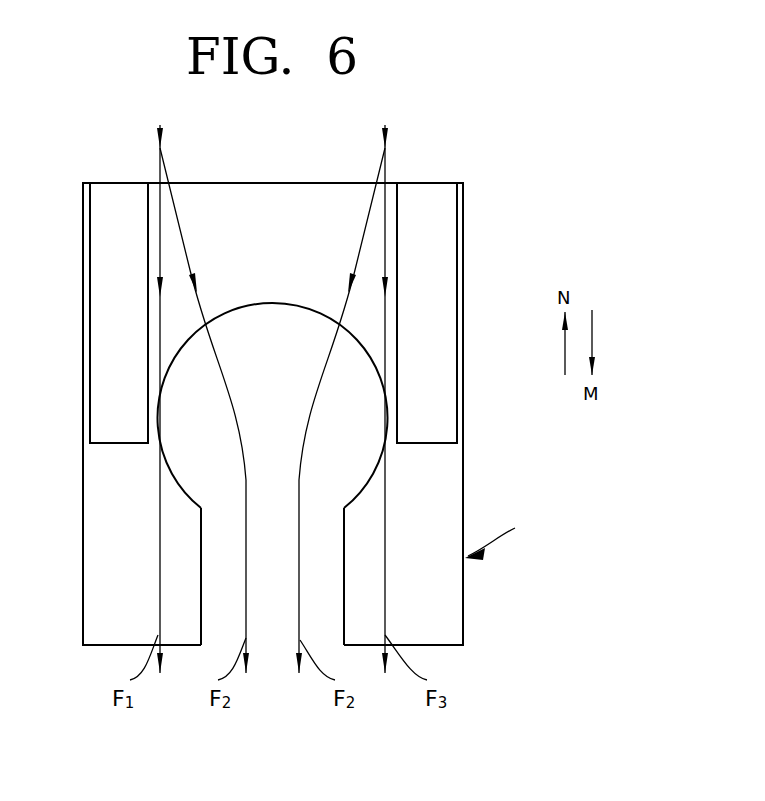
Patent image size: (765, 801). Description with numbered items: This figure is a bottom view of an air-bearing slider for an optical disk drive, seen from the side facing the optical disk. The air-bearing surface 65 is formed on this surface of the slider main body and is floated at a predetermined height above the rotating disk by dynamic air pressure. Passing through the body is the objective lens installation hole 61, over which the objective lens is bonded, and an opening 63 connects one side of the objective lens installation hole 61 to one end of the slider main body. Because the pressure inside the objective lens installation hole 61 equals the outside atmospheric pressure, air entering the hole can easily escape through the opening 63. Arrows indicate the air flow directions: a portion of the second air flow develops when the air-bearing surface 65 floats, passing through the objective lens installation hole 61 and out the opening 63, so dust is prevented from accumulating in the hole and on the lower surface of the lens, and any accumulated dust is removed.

The objective lens installation hole 61 is at (353, 470).
The opening 63 is at (336, 626).
The air-bearing surface 65 is at (445, 383).